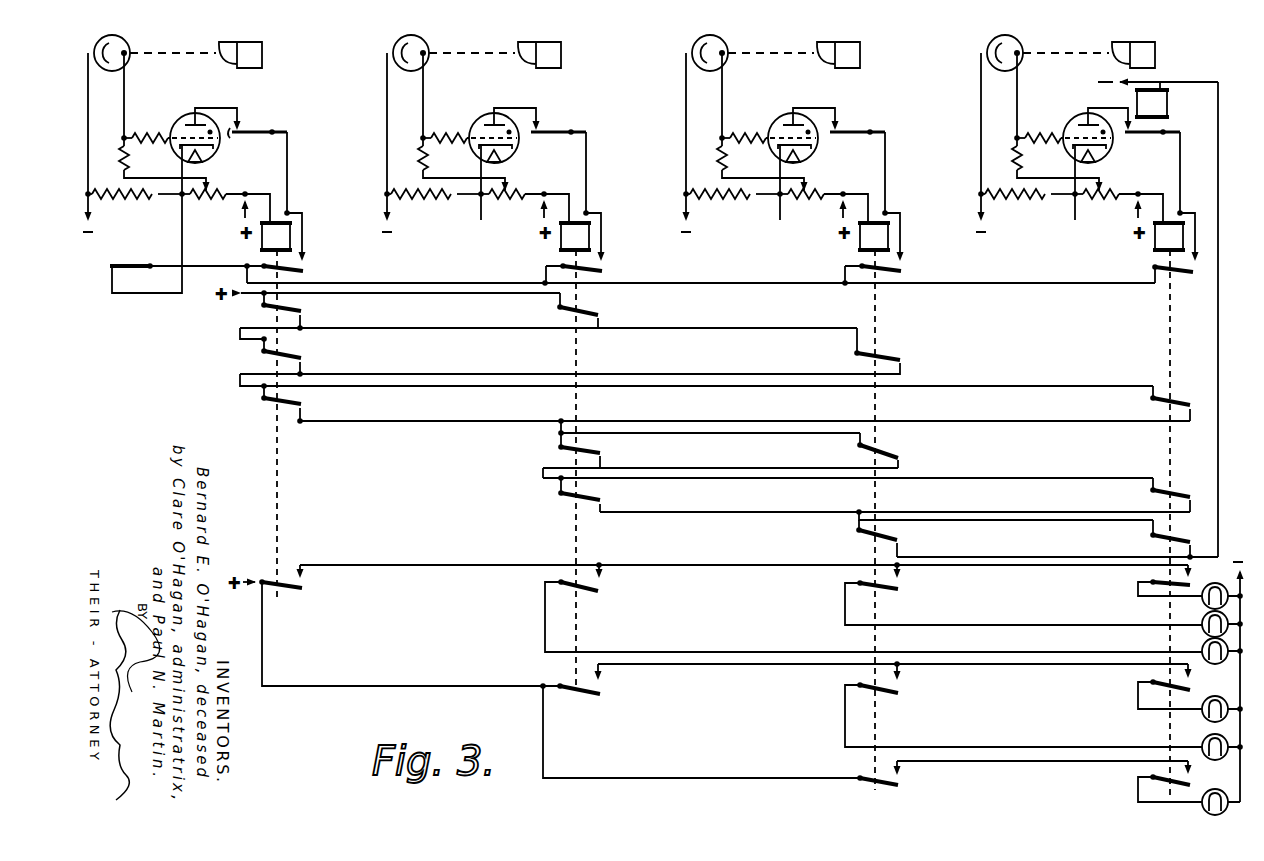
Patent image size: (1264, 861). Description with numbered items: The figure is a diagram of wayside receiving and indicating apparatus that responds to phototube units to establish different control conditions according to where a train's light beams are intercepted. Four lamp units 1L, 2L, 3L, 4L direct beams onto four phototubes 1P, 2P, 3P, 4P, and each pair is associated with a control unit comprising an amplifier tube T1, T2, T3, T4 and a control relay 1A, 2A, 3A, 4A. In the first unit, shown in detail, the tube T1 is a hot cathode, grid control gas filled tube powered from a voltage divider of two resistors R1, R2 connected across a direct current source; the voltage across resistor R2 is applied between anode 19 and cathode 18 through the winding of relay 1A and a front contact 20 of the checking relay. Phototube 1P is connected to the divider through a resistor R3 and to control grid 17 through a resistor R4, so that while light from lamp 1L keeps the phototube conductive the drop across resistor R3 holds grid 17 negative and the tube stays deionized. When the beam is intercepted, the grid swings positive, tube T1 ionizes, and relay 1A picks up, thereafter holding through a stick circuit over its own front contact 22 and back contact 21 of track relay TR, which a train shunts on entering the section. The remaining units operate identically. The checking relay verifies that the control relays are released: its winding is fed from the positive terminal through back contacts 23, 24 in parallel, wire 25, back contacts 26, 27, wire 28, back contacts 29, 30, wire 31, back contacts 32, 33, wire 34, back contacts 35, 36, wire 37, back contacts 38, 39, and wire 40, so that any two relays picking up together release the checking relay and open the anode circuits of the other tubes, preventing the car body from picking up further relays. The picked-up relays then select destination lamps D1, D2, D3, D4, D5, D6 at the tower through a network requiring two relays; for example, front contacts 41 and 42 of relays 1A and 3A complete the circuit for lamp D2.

The phototube 1P is at (120, 38).
The phototube 2P is at (428, 52).
The phototube 3P is at (727, 52).
The phototube 4P is at (1022, 52).
The lamp unit 1L is at (262, 46).
The lamp unit 2L is at (558, 50).
The lamp unit 3L is at (857, 50).
The lamp unit 4L is at (1152, 50).
The amplifier tube T1 is at (184, 114).
The amplifier tube T2 is at (484, 125).
The amplifier tube T3 is at (783, 125).
The amplifier tube T4 is at (1078, 125).
The resistor R1 is at (133, 207).
The resistor R2 is at (226, 207).
The resistor R3 is at (164, 164).
The resistor R4 is at (145, 127).
The control grid 17 is at (213, 148).
The cathode 18 is at (214, 151).
The anode 19 is at (230, 108).
The front contact 20 is at (233, 136).
The back contact 21 is at (114, 280).
The track relay TR is at (187, 254).
The control relay 1A is at (262, 243).
The control relay 2A is at (551, 240).
The control relay 3A is at (850, 240).
The control relay 4A is at (1145, 240).
The front contact 22 is at (305, 268).
The back contact 23 is at (304, 313).
The back contact 24 is at (602, 316).
The wire 25 is at (730, 330).
The back contact 26 is at (304, 360).
The back contact 27 is at (904, 361).
The wire 28 is at (725, 386).
The back contact 29 is at (304, 406).
The back contact 30 is at (1203, 391).
The wire 31 is at (712, 434).
The back contact 32 is at (604, 455).
The back contact 33 is at (902, 457).
The wire 34 is at (1024, 470).
The back contact 35 is at (604, 502).
The back contact 36 is at (1203, 484).
The wire 37 is at (1060, 520).
The back contact 38 is at (901, 540).
The back contact 39 is at (1170, 544).
The wire 40 is at (1218, 336).
The front contact 41 is at (314, 582).
The front contact 42 is at (902, 585).
The destination lamp D1 is at (1183, 584).
The destination lamp D2 is at (1200, 619).
The destination lamp D3 is at (1200, 646).
The destination lamp D4 is at (1183, 695).
The destination lamp D5 is at (1200, 740).
The destination lamp D6 is at (1183, 788).